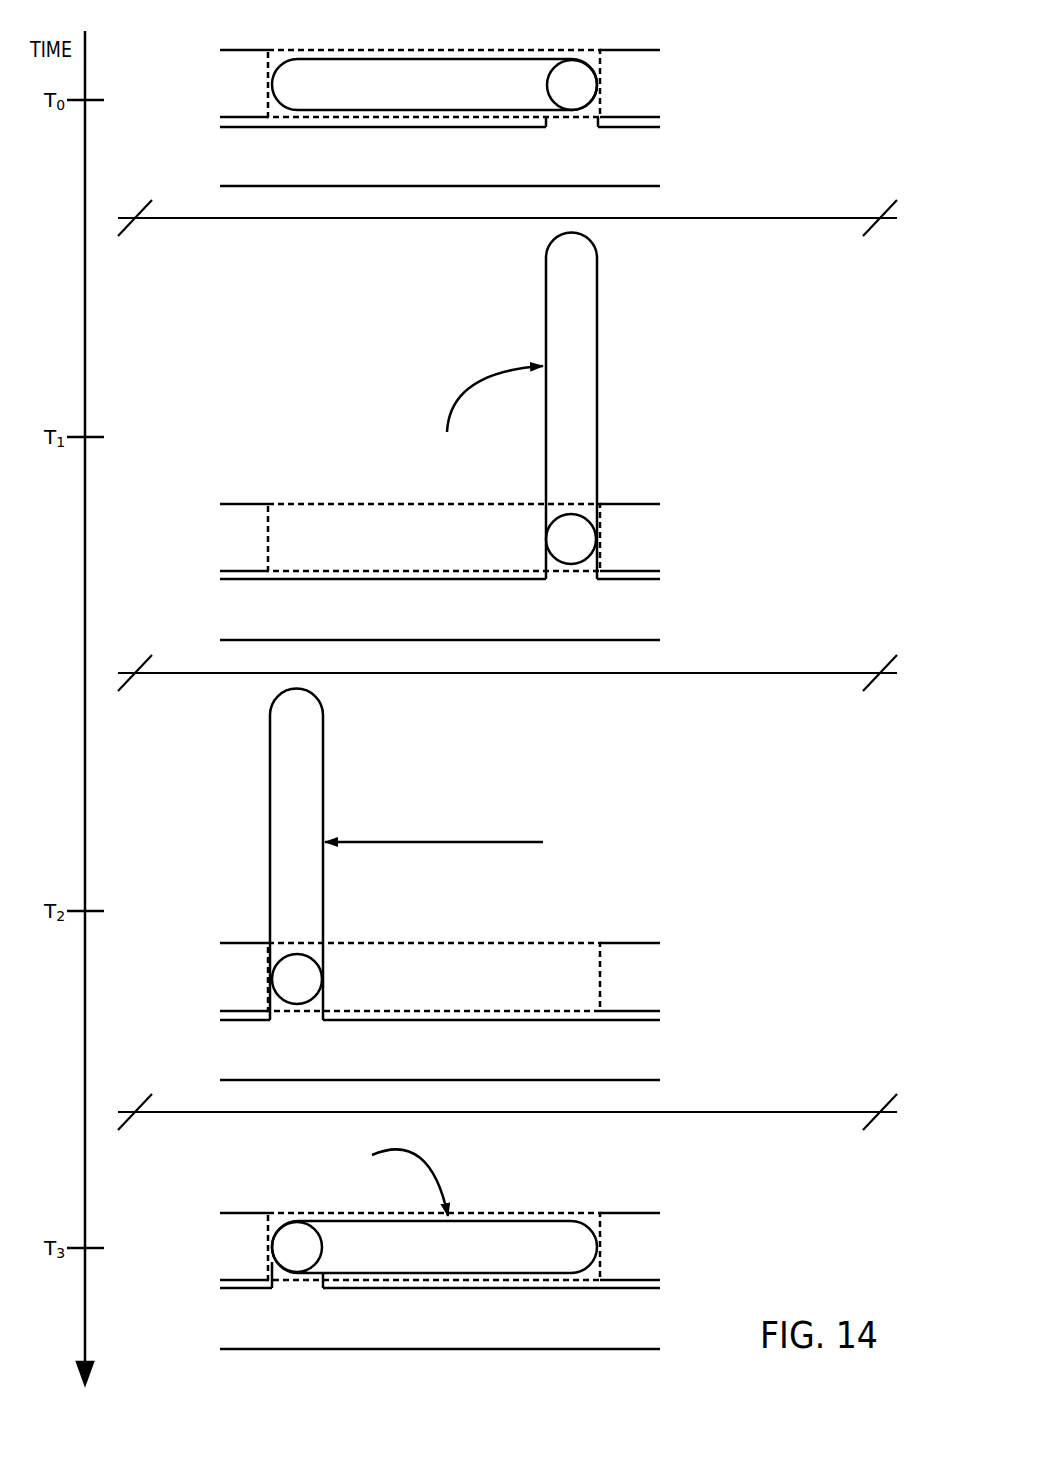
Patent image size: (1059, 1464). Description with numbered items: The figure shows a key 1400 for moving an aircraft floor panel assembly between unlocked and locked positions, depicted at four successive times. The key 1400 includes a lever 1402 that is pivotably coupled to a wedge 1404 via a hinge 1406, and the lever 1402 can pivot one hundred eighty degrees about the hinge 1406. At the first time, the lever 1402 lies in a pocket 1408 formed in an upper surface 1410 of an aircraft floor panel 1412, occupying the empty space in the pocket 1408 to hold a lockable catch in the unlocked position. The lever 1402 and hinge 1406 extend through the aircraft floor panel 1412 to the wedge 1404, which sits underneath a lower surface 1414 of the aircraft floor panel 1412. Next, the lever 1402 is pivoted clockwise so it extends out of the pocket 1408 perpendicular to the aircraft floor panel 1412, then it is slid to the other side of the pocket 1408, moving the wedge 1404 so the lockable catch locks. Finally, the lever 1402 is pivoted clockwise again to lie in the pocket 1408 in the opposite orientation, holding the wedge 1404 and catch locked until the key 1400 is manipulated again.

The key 1400 is at (479, 647).
The lever 1402 is at (458, 58).
The wedge 1404 is at (625, 186).
The hinge 1406 is at (572, 60).
The pocket 1408 is at (331, 46).
The upper surface 1410 is at (238, 46).
The aircraft floor panel 1412 is at (625, 118).
The lower surface 1414 is at (238, 121).